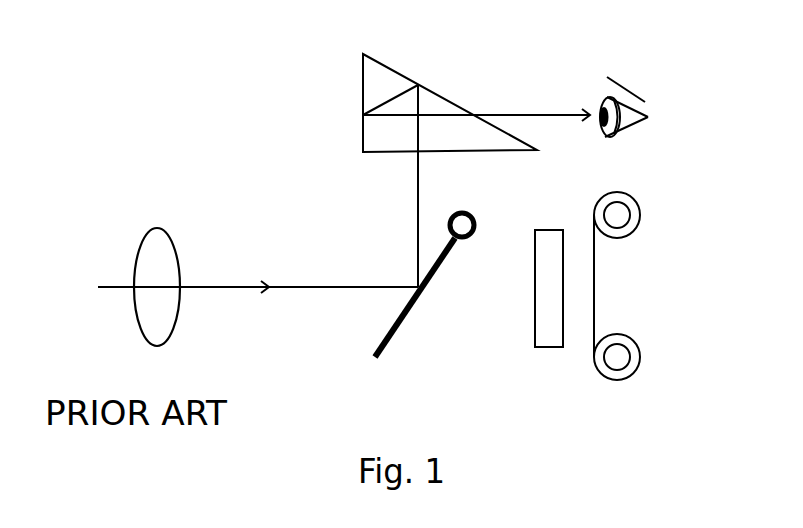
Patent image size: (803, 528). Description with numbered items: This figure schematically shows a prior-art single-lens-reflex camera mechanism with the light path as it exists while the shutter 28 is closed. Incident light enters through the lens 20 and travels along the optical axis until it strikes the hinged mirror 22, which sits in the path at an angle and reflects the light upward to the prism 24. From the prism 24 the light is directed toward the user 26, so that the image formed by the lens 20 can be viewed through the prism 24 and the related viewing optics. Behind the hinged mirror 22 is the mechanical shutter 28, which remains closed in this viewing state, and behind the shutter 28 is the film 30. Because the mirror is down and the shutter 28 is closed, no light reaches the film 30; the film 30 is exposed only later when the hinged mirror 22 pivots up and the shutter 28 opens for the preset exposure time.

The lens 20 is at (143, 251).
The hinged mirror 22 is at (400, 320).
The prism 24 is at (385, 63).
The user 26 is at (640, 125).
The shutter 28 is at (553, 340).
The film 30 is at (596, 320).